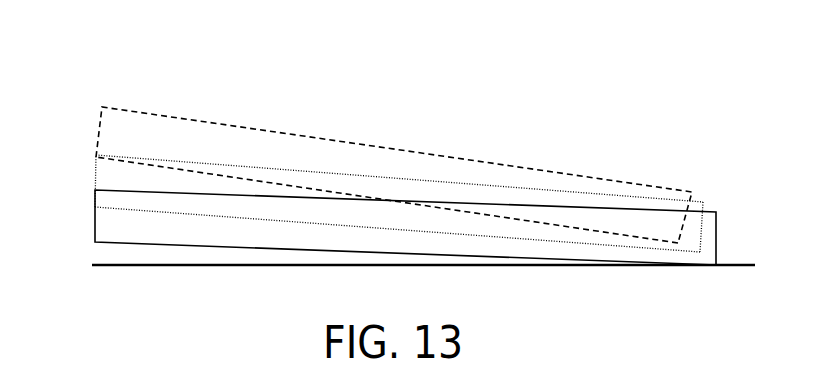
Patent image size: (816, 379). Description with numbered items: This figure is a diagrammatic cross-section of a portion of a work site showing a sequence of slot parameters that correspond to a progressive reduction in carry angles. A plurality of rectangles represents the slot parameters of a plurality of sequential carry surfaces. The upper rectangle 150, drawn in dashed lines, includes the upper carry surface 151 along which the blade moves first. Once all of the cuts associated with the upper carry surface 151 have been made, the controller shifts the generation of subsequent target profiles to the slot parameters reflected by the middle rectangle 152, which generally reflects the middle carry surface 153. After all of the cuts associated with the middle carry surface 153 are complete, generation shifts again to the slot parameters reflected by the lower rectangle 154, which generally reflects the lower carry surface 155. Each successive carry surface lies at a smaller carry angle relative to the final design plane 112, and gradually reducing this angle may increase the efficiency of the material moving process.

The final design plane 112 is at (168, 265).
The upper rectangle 150 is at (136, 111).
The upper carry surface 151 is at (265, 182).
The middle rectangle 152 is at (388, 178).
The middle carry surface 153 is at (447, 235).
The lower rectangle 154 is at (95, 217).
The lower carry surface 155 is at (203, 246).